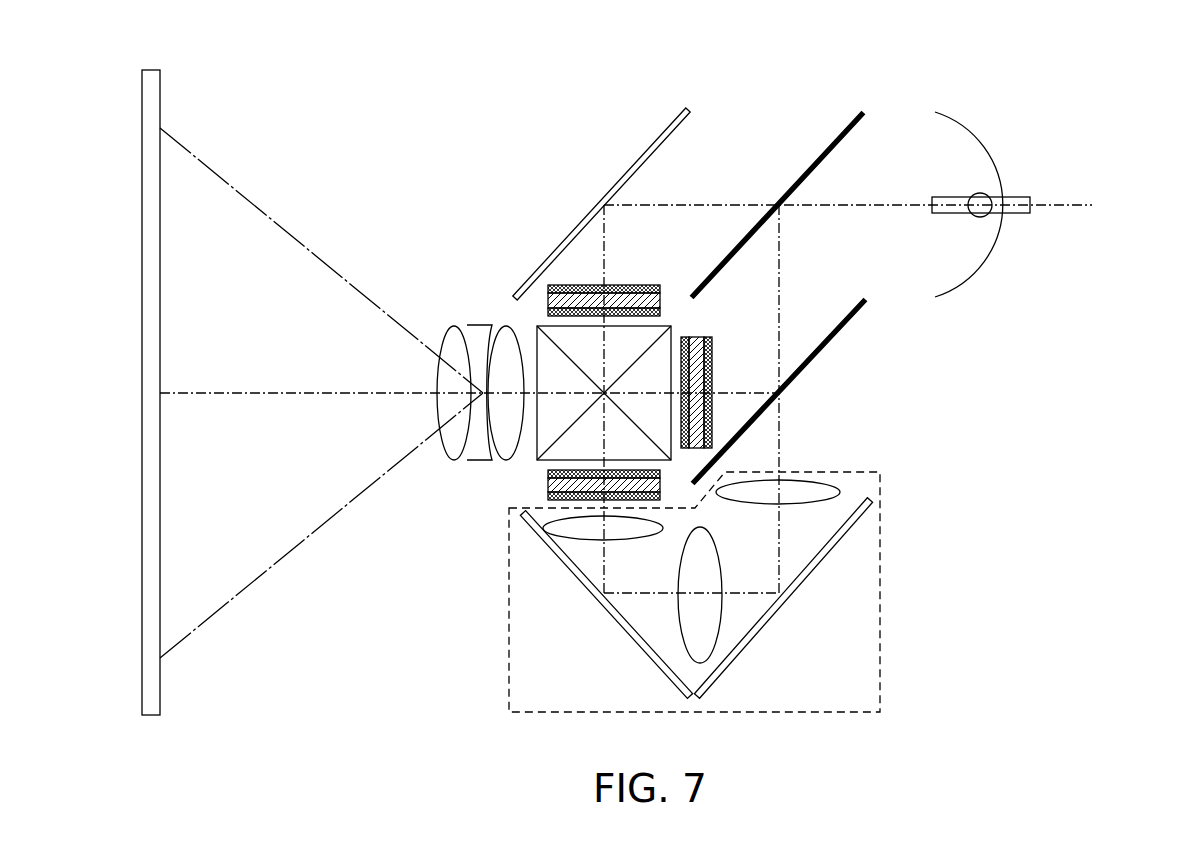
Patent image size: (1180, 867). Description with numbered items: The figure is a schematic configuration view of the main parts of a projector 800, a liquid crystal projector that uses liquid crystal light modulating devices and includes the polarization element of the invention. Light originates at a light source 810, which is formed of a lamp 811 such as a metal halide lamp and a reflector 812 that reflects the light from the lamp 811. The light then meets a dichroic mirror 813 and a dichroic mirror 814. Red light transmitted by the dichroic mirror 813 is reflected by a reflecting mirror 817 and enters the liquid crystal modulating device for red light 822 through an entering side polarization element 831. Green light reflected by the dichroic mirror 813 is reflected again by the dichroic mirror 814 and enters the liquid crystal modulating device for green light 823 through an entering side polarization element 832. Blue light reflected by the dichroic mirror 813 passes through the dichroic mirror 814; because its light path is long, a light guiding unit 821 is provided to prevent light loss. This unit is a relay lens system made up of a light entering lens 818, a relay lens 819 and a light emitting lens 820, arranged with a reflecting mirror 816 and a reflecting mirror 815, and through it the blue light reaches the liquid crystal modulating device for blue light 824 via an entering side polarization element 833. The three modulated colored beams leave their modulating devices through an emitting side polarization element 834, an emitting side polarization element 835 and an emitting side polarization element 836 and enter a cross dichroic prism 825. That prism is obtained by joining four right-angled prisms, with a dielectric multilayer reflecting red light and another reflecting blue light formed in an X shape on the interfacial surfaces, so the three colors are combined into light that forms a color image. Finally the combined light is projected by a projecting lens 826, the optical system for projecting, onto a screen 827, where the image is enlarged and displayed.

The projector 800 is at (1110, 104).
The light source 810 is at (997, 179).
The lamp 811 is at (977, 198).
The reflector 812 is at (982, 270).
The dichroic mirror 813 is at (828, 145).
The dichroic mirror 814 is at (830, 338).
The reflecting mirror 815 is at (793, 585).
The reflecting mirror 816 is at (587, 583).
The reflecting mirror 817 is at (643, 152).
The light entering lens 818 is at (805, 488).
The relay lens 819 is at (710, 622).
The light emitting lens 820 is at (637, 528).
The light guiding unit 821 is at (882, 613).
The liquid crystal modulating device for red light 822 is at (663, 300).
The liquid crystal modulating device for green light 823 is at (694, 337).
The liquid crystal modulating device for blue light 824 is at (548, 485).
The cross dichroic prism 825 is at (548, 432).
The projecting lens 826 is at (523, 320).
The screen 827 is at (150, 70).
The entering side polarization element 831 is at (633, 285).
The entering side polarization element 832 is at (710, 345).
The entering side polarization element 833 is at (548, 496).
The emitting side polarization element 834 is at (548, 312).
The emitting side polarization element 835 is at (683, 337).
The emitting side polarization element 836 is at (548, 473).